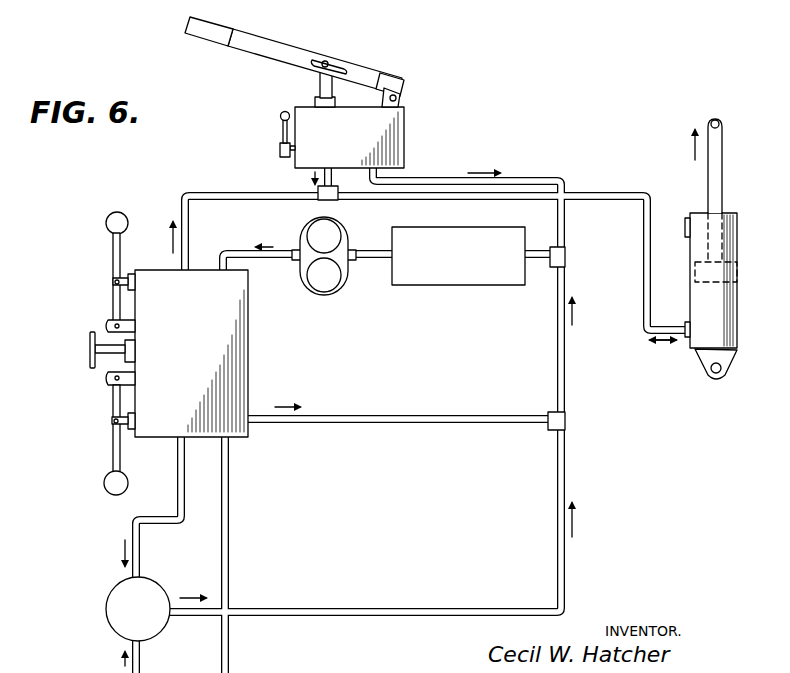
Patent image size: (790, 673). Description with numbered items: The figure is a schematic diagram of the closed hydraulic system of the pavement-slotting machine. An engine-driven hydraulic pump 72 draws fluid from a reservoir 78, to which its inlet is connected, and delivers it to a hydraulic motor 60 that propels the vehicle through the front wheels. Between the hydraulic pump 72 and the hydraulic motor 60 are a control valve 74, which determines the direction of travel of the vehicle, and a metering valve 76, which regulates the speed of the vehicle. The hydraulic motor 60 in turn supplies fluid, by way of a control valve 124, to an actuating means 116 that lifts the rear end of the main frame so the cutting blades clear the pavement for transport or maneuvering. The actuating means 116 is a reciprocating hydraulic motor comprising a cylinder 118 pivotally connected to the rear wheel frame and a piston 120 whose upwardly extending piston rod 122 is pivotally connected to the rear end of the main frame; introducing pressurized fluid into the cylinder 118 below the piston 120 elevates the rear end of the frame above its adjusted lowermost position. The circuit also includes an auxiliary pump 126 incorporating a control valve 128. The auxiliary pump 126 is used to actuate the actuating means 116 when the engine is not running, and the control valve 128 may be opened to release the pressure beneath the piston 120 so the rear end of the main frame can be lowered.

The hydraulic motor 60 is at (116, 631).
The hydraulic pump 72 is at (328, 296).
The control valve 74 is at (110, 456).
The metering valve 76 is at (90, 350).
The reservoir 78 is at (417, 286).
The actuating means 116 is at (689, 312).
The cylinder 118 is at (698, 340).
The piston 120 is at (698, 272).
The piston rod 122 is at (712, 195).
The control valve 124 is at (113, 262).
The auxiliary pump 126 is at (398, 142).
The control valve 128 is at (280, 152).